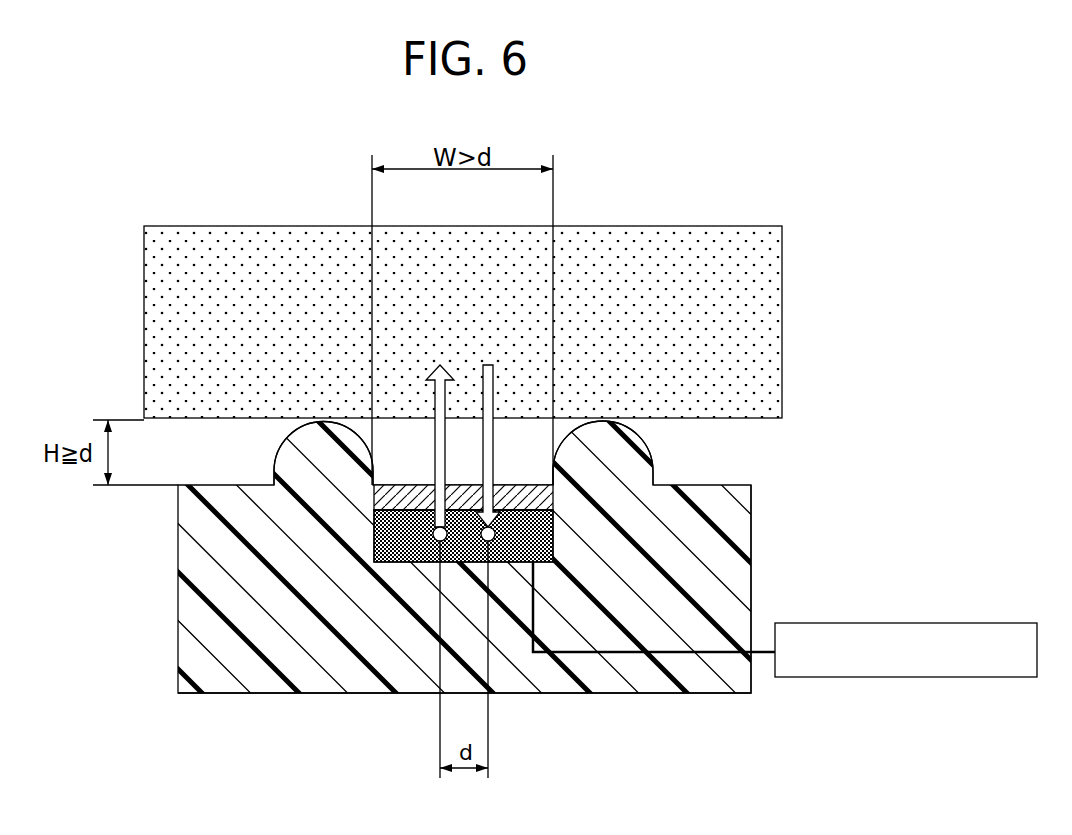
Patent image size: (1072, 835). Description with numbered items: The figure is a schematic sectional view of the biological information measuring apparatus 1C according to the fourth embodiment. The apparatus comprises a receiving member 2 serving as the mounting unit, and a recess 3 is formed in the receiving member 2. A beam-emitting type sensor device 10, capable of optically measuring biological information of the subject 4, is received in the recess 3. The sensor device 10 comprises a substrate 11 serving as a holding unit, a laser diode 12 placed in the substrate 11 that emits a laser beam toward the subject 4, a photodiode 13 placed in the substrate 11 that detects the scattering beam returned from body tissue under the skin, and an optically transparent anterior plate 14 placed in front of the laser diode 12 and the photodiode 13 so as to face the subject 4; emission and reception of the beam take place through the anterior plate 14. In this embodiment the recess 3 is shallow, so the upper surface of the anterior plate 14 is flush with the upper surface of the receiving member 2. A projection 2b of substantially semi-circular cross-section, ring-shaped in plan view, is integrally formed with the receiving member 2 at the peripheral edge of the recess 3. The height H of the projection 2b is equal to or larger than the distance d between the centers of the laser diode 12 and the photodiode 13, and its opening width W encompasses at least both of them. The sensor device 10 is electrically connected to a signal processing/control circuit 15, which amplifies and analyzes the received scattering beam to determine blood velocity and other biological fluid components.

The biological information measuring apparatus 1C is at (622, 726).
The receiving member 2 is at (740, 577).
The projection 2b is at (293, 456).
The recess 3 is at (376, 542).
The subject 4 is at (766, 317).
The beam-emitting type sensor device 10 is at (375, 550).
The substrate 11 is at (390, 509).
The laser diode 12 is at (433, 538).
The photodiode 13 is at (495, 539).
The anterior plate 14 is at (545, 497).
The signal processing/control circuit 15 is at (877, 623).